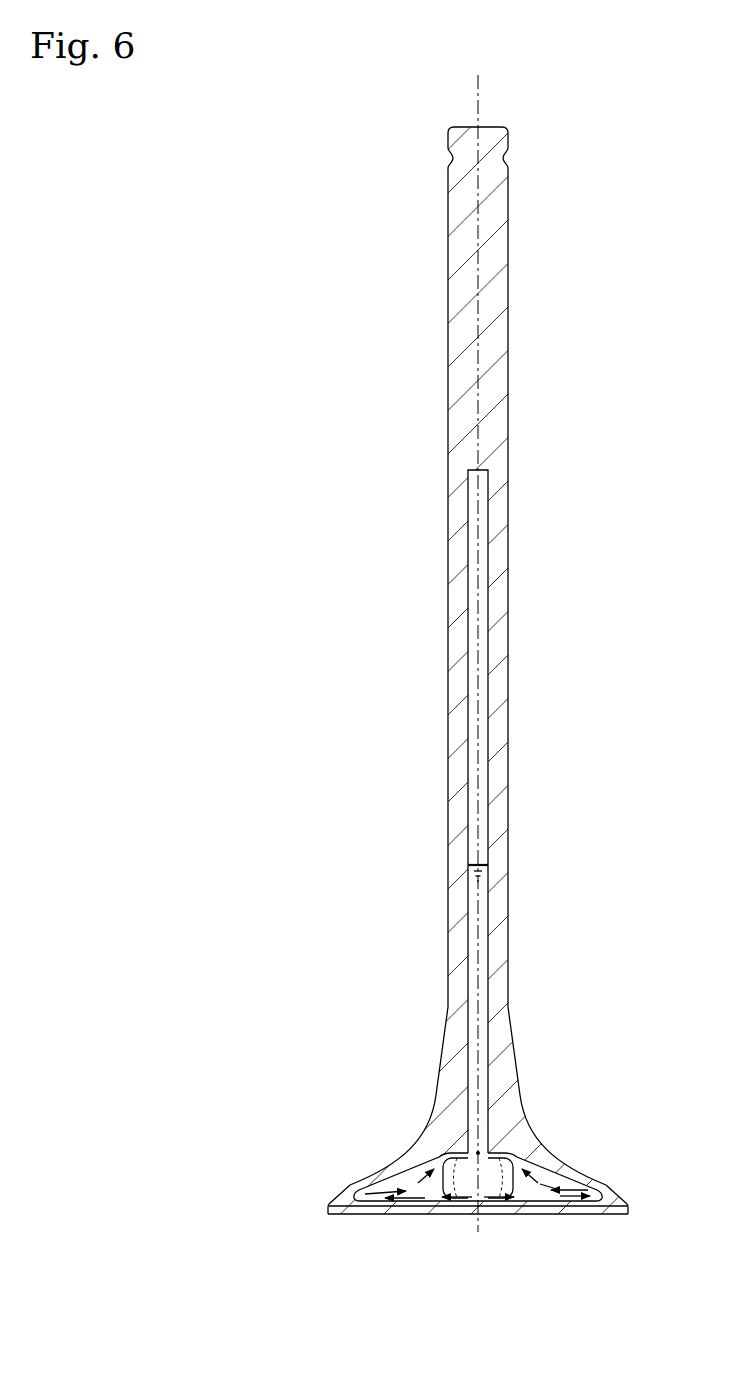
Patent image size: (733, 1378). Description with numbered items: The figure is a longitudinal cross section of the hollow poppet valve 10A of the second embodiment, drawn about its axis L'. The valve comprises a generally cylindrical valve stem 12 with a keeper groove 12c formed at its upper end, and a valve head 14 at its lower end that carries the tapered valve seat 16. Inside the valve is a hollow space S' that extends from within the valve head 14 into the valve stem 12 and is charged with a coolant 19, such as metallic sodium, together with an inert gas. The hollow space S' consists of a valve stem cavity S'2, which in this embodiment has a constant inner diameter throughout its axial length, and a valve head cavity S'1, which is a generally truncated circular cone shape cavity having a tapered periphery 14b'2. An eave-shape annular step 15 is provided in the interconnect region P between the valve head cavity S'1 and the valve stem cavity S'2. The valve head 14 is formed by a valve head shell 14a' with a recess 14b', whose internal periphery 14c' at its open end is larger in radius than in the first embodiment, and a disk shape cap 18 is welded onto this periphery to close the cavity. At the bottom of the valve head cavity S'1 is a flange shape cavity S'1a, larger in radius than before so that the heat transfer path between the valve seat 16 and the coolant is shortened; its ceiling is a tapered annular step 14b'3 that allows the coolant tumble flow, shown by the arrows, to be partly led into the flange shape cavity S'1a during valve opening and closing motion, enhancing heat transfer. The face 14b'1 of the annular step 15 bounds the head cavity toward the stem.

The hollow poppet valve 10A is at (416, 303).
The axis L' is at (509, 653).
The valve stem 12 is at (517, 567).
The keeper groove 12c is at (508, 156).
The coolant 19 is at (482, 864).
The hollow space S' is at (491, 901).
The valve stem cavity S'2 is at (539, 801).
The valve head cavity S'1 is at (480, 1202).
The flange shape cavity S'1a is at (590, 1161).
The annular step 15 is at (497, 1150).
The interconnect region P is at (478, 1160).
The valve head 14 is at (463, 1152).
The valve head shell 14a' is at (463, 1152).
The recess 14b' is at (457, 1245).
The first inner surface portion 14b'1 is at (457, 1245).
The tapered periphery 14b'2 is at (521, 1216).
The annular step 14b'3 is at (573, 1258).
The internal periphery 14c' is at (377, 1237).
The valve seat 16 is at (617, 1201).
The cap 18 is at (583, 1212).